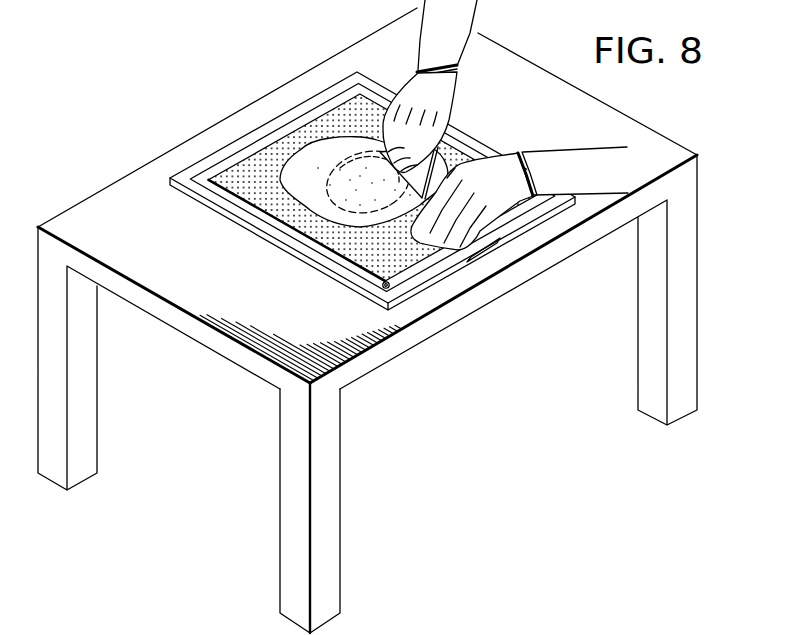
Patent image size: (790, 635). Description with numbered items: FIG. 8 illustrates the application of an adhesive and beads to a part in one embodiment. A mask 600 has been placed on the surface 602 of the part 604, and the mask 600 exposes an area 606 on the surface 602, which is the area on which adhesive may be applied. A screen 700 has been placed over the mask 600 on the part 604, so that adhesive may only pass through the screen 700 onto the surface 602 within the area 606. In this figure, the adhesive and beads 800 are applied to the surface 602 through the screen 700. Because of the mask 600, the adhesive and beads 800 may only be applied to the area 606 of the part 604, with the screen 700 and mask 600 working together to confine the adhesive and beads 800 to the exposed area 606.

The mask 600 is at (408, 270).
The surface 602 is at (328, 91).
The part 604 is at (187, 156).
The area 606 is at (291, 198).
The screen 700 is at (322, 253).
The adhesive and beads 800 is at (326, 152).